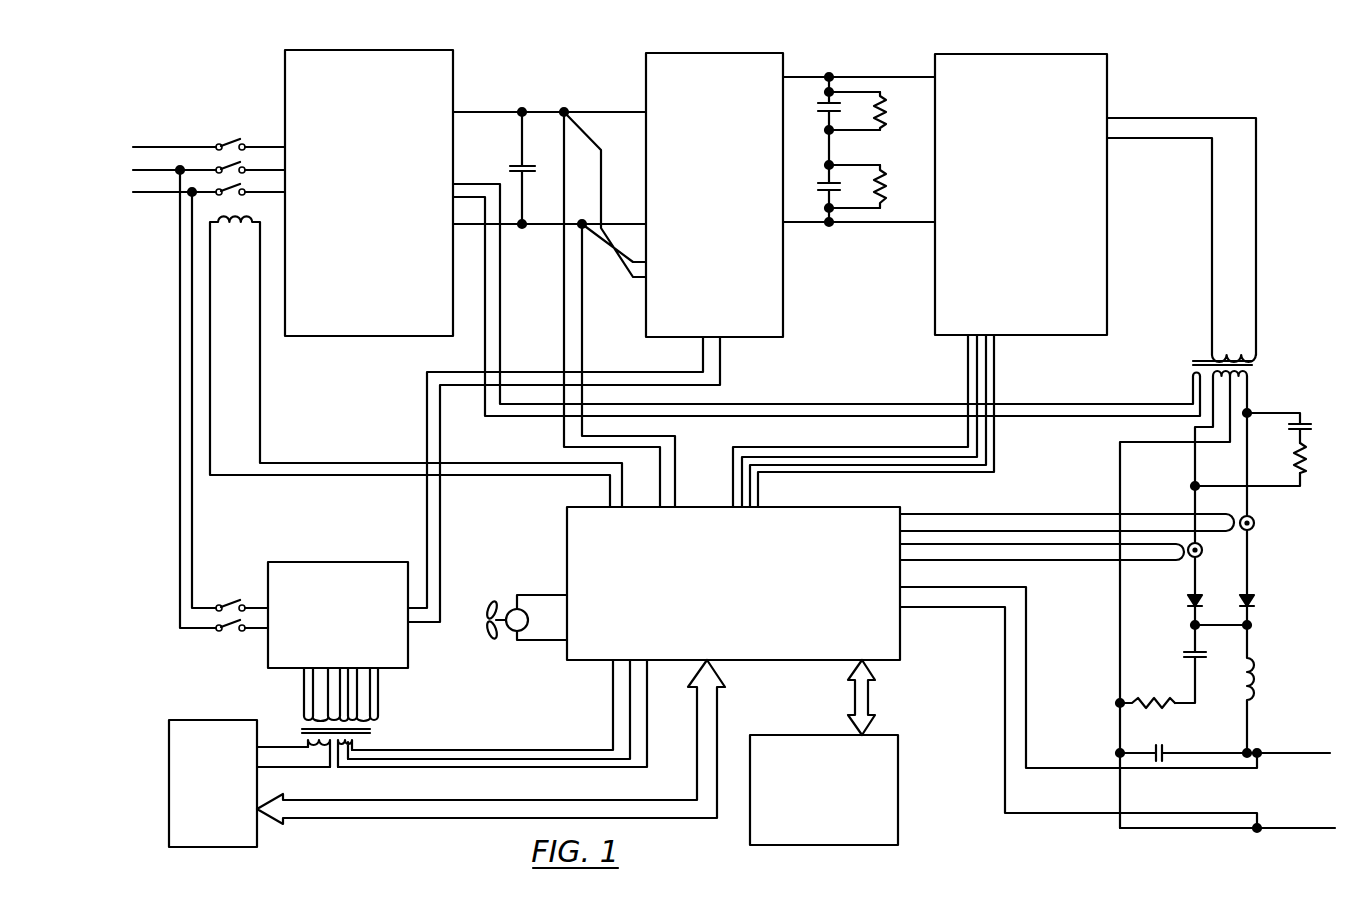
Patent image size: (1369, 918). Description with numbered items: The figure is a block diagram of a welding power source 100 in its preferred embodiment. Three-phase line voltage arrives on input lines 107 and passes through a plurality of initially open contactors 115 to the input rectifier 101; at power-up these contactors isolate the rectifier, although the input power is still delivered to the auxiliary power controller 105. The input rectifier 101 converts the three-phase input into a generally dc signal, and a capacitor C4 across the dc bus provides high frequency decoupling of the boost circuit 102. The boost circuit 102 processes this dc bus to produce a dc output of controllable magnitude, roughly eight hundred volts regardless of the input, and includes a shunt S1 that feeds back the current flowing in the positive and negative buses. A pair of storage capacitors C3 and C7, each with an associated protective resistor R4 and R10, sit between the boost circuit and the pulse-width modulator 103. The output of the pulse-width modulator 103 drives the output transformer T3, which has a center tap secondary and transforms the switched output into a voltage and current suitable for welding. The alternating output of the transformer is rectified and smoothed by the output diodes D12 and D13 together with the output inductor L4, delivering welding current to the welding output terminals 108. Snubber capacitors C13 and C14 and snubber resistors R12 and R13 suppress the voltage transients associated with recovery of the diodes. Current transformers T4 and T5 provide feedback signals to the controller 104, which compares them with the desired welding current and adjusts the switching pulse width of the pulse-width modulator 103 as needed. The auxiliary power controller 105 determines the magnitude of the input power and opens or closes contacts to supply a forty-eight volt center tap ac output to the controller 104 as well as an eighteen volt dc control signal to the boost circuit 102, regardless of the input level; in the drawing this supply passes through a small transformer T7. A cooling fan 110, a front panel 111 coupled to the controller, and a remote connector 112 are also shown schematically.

The welding power source 100 is at (1150, 70).
The input rectifier 101 is at (352, 206).
The boost circuit 102 is at (697, 169).
The pulse-width modulator 103 is at (1002, 181).
The controller 104 is at (715, 599).
The auxiliary power controller 105 is at (320, 654).
The input lines 107 is at (157, 147).
The welding output terminals 108 is at (1312, 753).
The cooling fan 110 is at (506, 604).
The front panel 111 is at (808, 829).
The remote connector 112 is at (193, 720).
The contactors 115 is at (226, 160).
The storage capacitor C3 is at (815, 121).
The capacitor C4 is at (505, 168).
The storage capacitor C7 is at (815, 193).
The snubber capacitor C13 is at (1175, 664).
The snubber capacitor C14 is at (1299, 428).
The protective resistor R4 is at (872, 111).
The protective resistor R10 is at (877, 186).
The snubber resistor R12 is at (1273, 464).
The snubber resistor R13 is at (1147, 693).
The output diode D12 is at (1172, 609).
The output diode D13 is at (1268, 609).
The output inductor L4 is at (1268, 689).
The shunt S1 is at (568, 110).
The output transformer T3 is at (1256, 363).
The current transformer T4 is at (1092, 504).
The current transformer T5 is at (1065, 540).
The transformer T7 is at (376, 737).